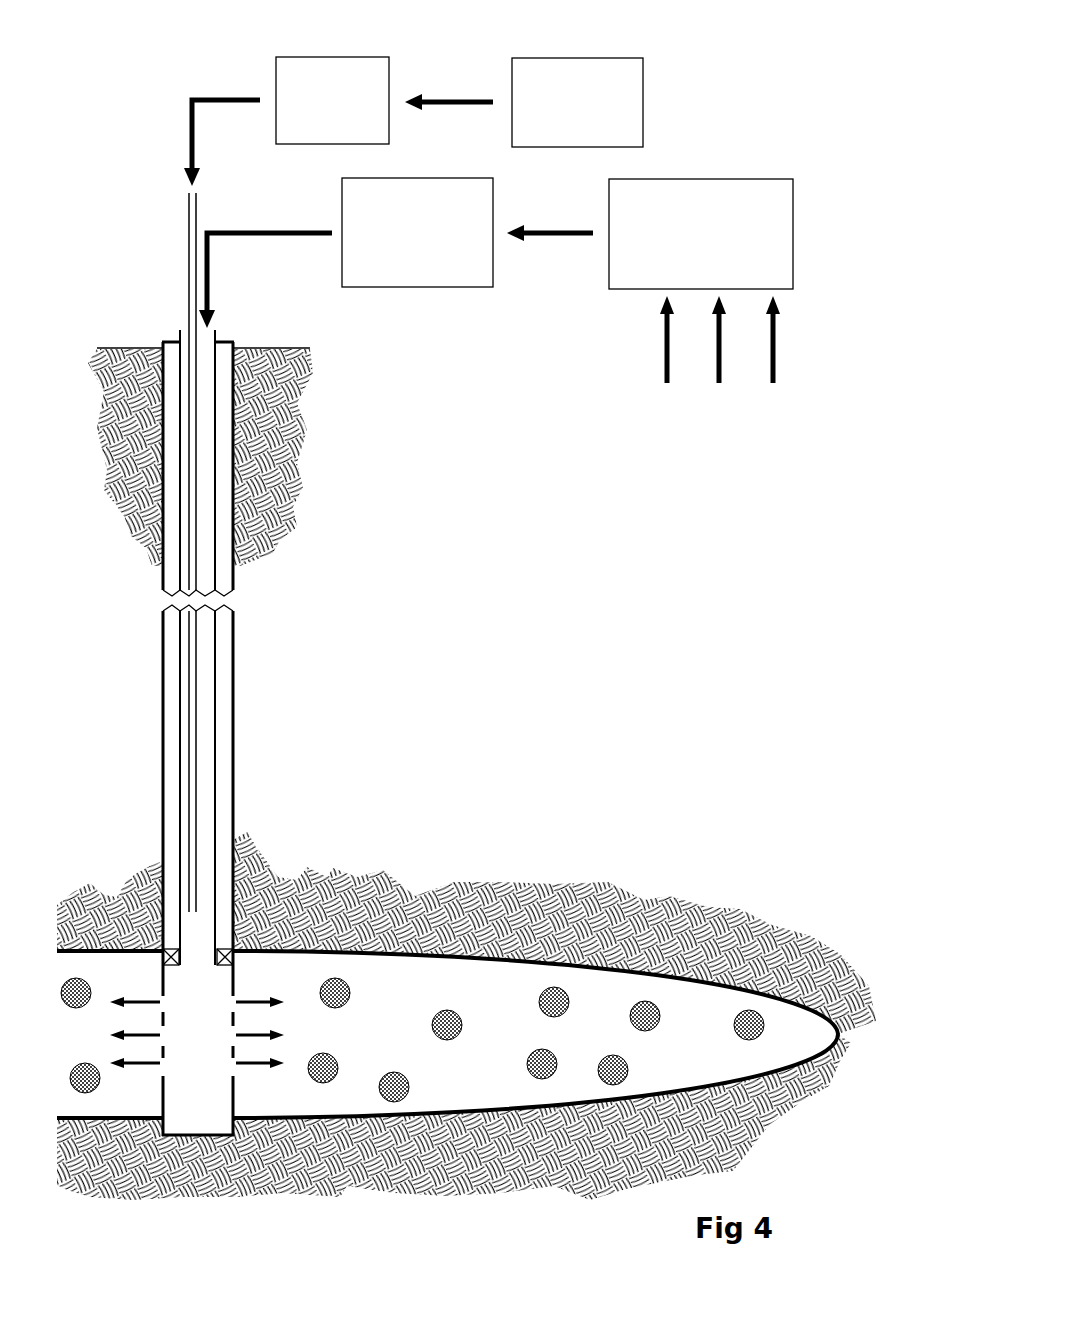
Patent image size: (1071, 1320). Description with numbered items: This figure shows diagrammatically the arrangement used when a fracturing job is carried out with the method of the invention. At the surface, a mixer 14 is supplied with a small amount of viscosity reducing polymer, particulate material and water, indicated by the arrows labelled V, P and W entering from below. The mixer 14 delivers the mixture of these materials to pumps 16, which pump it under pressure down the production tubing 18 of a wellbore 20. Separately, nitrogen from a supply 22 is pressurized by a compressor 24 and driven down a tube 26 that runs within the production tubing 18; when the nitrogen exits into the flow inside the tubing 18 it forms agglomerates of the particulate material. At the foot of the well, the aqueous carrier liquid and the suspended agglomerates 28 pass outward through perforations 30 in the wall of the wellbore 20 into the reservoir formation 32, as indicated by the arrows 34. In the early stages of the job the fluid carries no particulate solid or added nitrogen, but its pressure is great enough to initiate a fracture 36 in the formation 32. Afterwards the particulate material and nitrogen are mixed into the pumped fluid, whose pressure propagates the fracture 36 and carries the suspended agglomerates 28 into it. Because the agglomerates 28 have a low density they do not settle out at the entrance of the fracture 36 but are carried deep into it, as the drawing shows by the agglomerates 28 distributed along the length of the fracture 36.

The mixer 14 is at (701, 296).
The pumps 16 is at (417, 232).
The production tubing 18 is at (217, 571).
The wellbore 20 is at (246, 705).
The supply 22 is at (577, 102).
The compressor 24 is at (332, 100).
The tube 26 is at (187, 222).
The agglomerates 28 is at (450, 1015).
The perforations 30 is at (235, 998).
The reservoir formation 32 is at (643, 921).
The arrows 34 is at (257, 1035).
The fracture 36 is at (703, 1035).